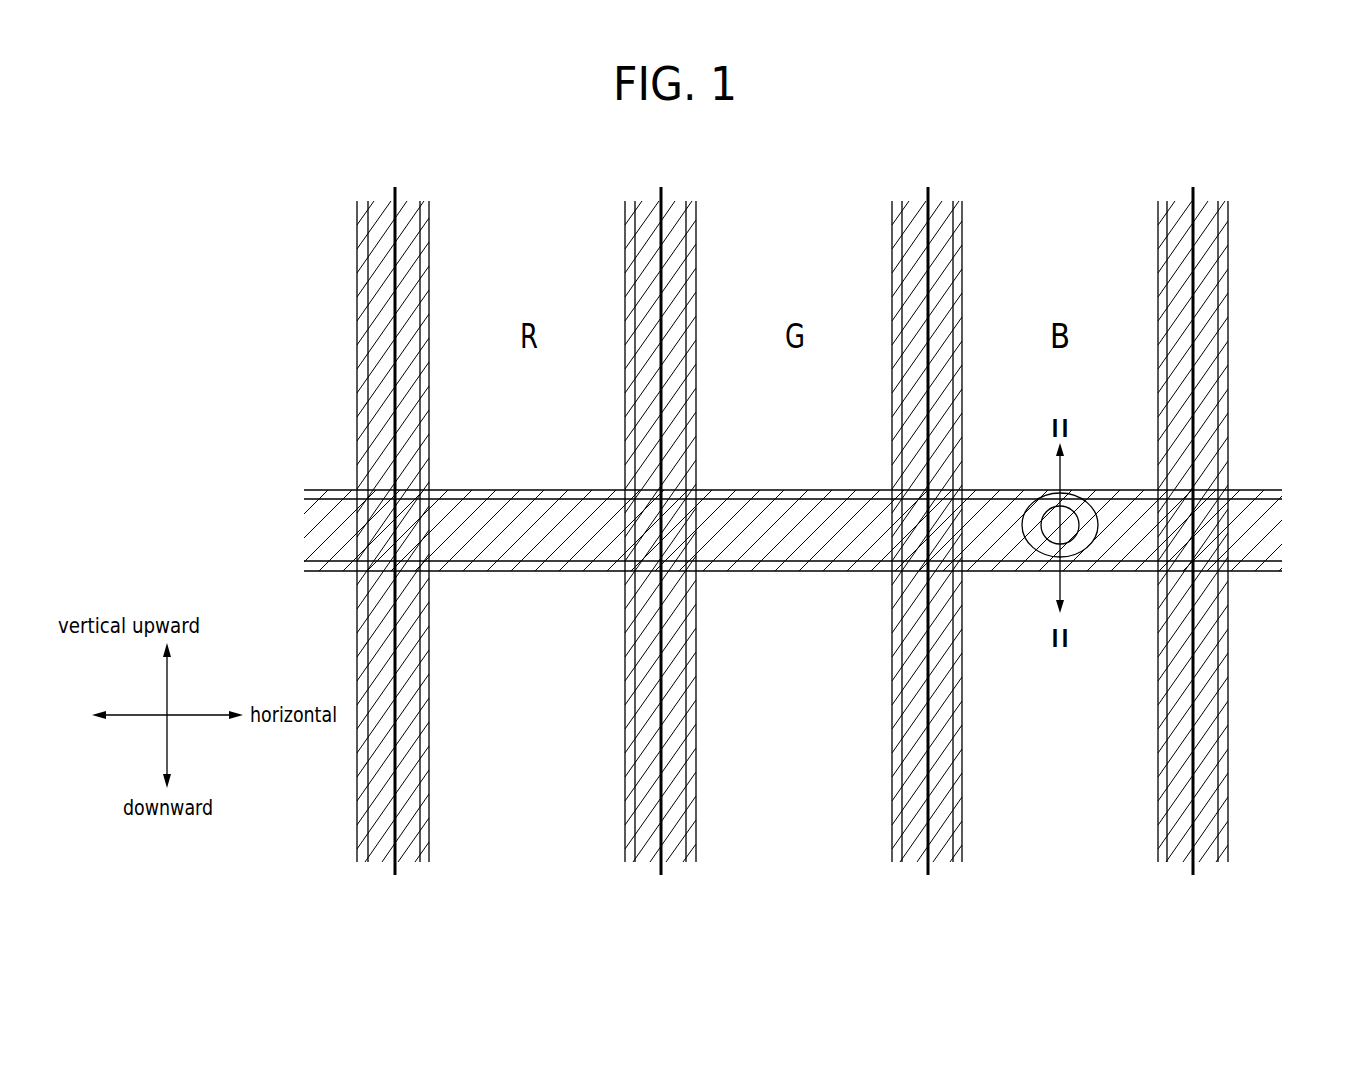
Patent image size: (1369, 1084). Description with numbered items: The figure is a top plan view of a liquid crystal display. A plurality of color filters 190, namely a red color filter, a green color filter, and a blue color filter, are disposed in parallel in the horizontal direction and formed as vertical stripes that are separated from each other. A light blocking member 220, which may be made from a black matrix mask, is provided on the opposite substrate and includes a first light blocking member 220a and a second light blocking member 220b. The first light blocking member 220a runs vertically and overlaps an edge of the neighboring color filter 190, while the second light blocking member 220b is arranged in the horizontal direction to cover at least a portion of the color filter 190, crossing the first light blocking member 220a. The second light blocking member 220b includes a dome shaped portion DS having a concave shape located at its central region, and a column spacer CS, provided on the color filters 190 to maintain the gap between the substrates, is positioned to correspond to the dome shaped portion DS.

The color filters 190 is at (660, 252).
The light blocking member 220 is at (830, 417).
The first light blocking member 220a is at (696, 432).
The second light blocking member 220b is at (808, 490).
The dome shaped portion DS is at (1026, 505).
The column spacer CS is at (1092, 513).